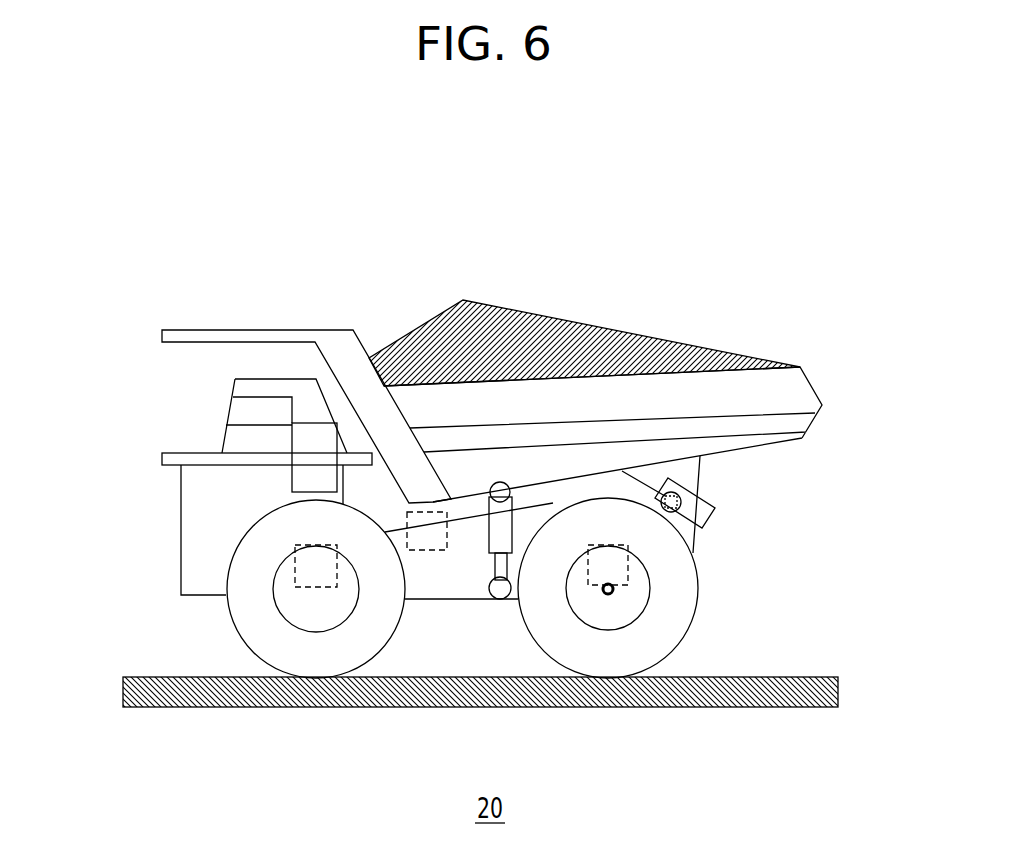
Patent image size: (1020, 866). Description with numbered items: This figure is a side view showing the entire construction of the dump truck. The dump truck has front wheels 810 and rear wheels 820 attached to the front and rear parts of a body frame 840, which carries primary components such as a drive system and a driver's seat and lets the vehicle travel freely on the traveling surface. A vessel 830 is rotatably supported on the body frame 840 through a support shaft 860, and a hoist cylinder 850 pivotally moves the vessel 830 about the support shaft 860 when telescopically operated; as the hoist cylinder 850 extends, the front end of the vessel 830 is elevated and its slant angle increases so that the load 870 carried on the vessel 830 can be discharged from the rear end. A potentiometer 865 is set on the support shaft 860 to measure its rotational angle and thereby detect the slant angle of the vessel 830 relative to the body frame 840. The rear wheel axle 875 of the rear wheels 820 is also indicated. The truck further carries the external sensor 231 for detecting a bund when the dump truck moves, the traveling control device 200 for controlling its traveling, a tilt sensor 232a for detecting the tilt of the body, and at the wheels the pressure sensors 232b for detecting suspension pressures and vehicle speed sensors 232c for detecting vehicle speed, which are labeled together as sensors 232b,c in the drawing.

The traveling control device 200 is at (455, 498).
The external sensor 231 is at (291, 433).
The tilt sensor 232a is at (417, 553).
The pressure sensors 232b is at (296, 585).
The vehicle speed sensors 232c is at (590, 575).
The pressure sensors and vehicle speed sensors 232b,c is at (379, 658).
The front wheels 810 is at (298, 657).
The rear wheels 820 is at (612, 655).
The vessel 830 is at (353, 330).
The body frame 840 is at (447, 582).
The hoist cylinder 850 is at (487, 537).
The support shaft 860 is at (695, 478).
The potentiometer 865 is at (681, 513).
The load 870 is at (603, 335).
The rear wheel axle 875 is at (613, 590).